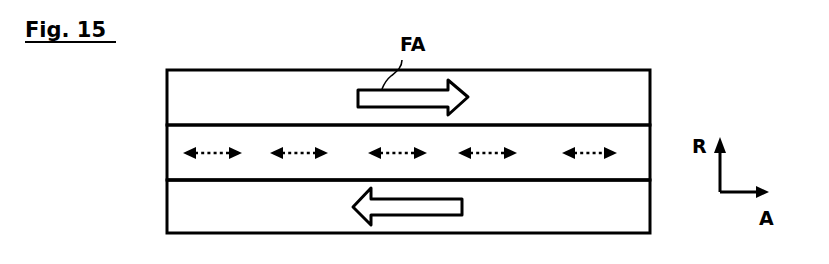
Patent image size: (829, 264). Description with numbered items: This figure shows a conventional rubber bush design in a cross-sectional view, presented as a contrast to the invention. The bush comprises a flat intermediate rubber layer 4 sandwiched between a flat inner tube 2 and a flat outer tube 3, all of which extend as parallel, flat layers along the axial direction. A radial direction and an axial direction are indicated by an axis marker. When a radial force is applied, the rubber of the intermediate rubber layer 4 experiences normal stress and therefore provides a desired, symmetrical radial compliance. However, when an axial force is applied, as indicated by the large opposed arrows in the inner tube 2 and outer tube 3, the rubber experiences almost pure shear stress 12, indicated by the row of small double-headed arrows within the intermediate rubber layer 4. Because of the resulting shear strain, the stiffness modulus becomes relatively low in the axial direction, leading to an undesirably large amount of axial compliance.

The flat inner tube 2 is at (637, 213).
The flat outer tube 3 is at (612, 86).
The intermediate rubber layer 4 is at (642, 132).
The shear stress 12 is at (485, 155).